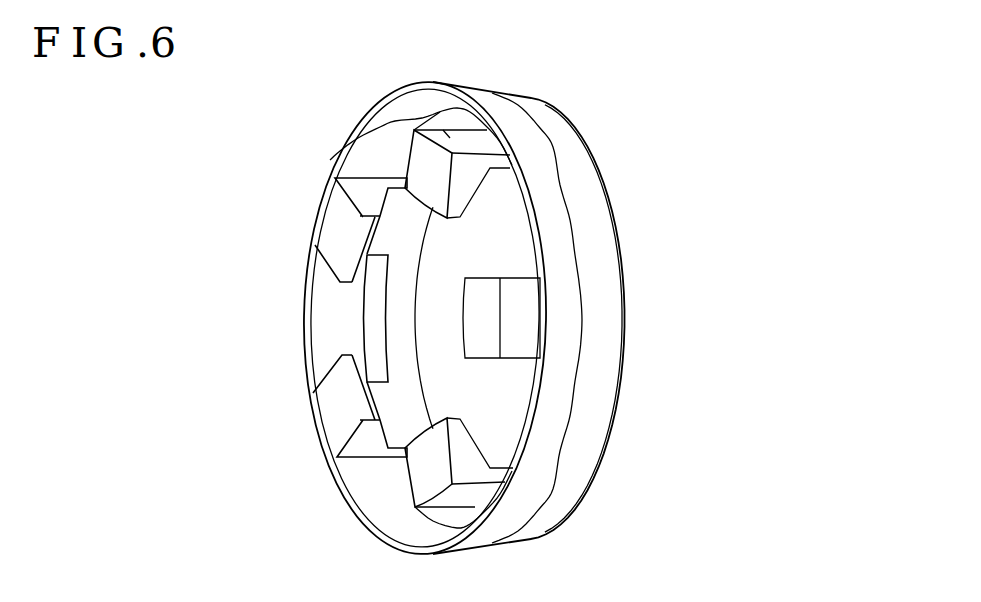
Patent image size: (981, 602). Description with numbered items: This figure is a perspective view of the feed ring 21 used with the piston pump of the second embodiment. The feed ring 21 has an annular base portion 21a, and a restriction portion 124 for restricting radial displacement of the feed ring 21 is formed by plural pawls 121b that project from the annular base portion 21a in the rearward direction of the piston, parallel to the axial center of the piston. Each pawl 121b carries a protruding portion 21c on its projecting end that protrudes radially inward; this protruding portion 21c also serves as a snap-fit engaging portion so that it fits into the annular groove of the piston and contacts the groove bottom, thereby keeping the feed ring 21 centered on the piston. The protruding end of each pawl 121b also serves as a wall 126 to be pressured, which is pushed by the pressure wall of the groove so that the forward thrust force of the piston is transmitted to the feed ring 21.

The feed ring 21 is at (517, 92).
The annular base portion 21a is at (593, 269).
The restriction portion 124 is at (224, 188).
The pawl 121b is at (362, 190).
The protruding portion 21c is at (350, 352).
The wall to be pressured 126 is at (423, 472).